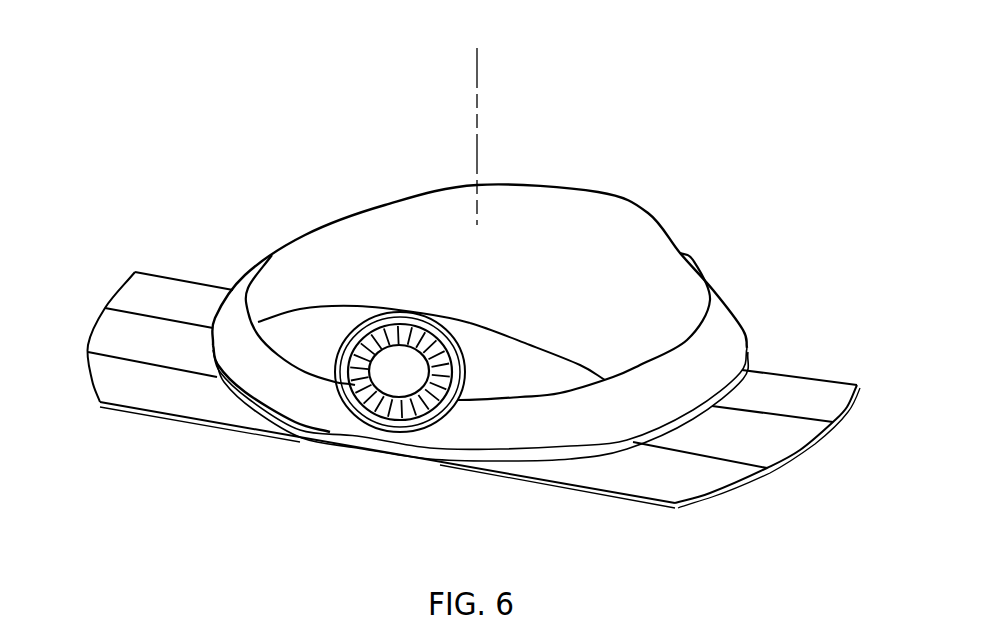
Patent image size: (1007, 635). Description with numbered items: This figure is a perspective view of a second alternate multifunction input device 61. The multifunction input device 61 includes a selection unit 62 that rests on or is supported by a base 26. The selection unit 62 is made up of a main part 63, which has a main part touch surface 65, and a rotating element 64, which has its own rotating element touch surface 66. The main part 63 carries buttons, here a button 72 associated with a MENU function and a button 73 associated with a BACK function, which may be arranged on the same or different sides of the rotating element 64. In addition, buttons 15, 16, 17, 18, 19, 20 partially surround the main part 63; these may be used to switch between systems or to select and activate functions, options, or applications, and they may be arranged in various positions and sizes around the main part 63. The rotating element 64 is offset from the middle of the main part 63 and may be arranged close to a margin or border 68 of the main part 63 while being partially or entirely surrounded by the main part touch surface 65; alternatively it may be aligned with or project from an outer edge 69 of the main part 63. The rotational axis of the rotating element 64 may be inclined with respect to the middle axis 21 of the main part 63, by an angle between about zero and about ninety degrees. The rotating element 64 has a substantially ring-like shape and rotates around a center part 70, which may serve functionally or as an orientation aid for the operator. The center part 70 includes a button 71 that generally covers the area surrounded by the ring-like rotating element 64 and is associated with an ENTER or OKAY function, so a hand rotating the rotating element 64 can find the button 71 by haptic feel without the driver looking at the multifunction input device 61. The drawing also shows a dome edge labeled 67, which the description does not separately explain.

The button 15 is at (690, 480).
The button 16 is at (777, 448).
The button 17 is at (827, 405).
The button 18 is at (128, 285).
The button 19 is at (105, 330).
The button 20 is at (98, 377).
The middle axis 21 is at (480, 71).
The base 26 is at (480, 438).
The multifunction input device 61 is at (599, 189).
The selection unit 62 is at (649, 212).
The main part 63 is at (664, 237).
The rotating element 64 is at (411, 417).
The main part touch surface 65 is at (659, 281).
The rotating element touch surface 66 is at (373, 410).
The dome edge 67 is at (385, 210).
The margin or border 68 is at (312, 442).
The outer edge 69 is at (336, 440).
The center part 70 is at (388, 340).
The button 71 is at (429, 338).
The button 72 is at (318, 314).
The button 73 is at (564, 367).